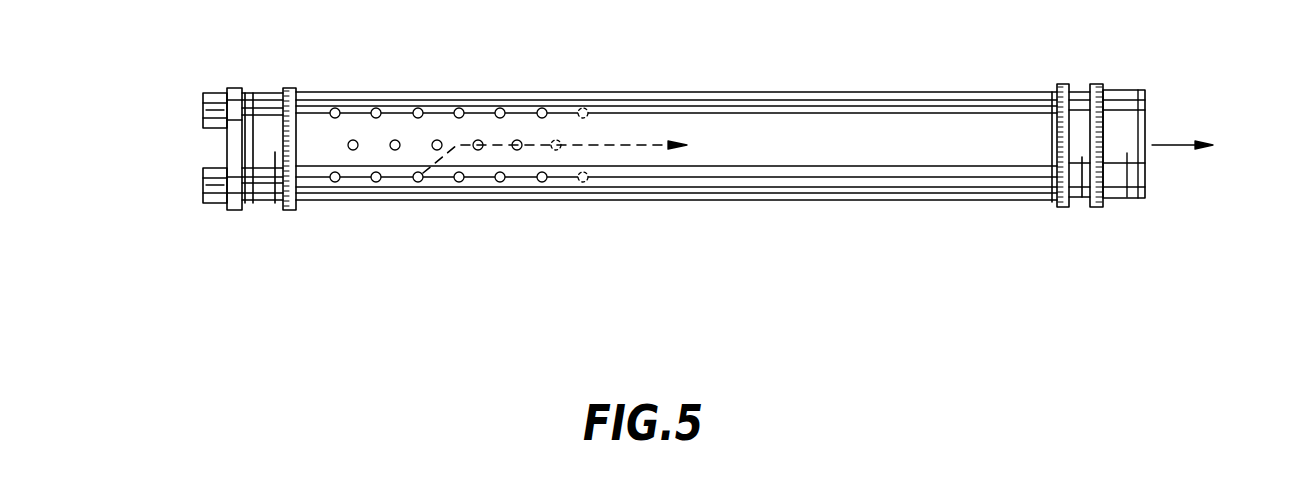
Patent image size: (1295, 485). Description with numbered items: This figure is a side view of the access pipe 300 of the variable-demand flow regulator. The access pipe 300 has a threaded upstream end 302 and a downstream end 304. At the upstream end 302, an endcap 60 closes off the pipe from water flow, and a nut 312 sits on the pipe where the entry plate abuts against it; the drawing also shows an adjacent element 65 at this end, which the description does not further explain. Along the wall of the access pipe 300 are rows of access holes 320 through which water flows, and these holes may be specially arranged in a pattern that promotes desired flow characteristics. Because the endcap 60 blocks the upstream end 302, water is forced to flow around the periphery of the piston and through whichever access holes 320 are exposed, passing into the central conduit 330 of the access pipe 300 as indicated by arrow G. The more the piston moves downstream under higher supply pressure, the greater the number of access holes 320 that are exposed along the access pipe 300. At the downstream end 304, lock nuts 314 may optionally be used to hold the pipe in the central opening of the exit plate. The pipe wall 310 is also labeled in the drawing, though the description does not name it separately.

The access pipe 300 is at (617, 47).
The upstream end 302 is at (265, 193).
The downstream end 304 is at (1130, 108).
The perforated tube 310 is at (640, 97).
The nut 312 is at (293, 88).
The lock nuts 314 is at (1100, 82).
The access holes 320 is at (462, 107).
The central conduit 330 is at (793, 140).
The endcap 60 is at (233, 83).
The mounting flange 65 is at (243, 88).
The arrow G is at (423, 173).